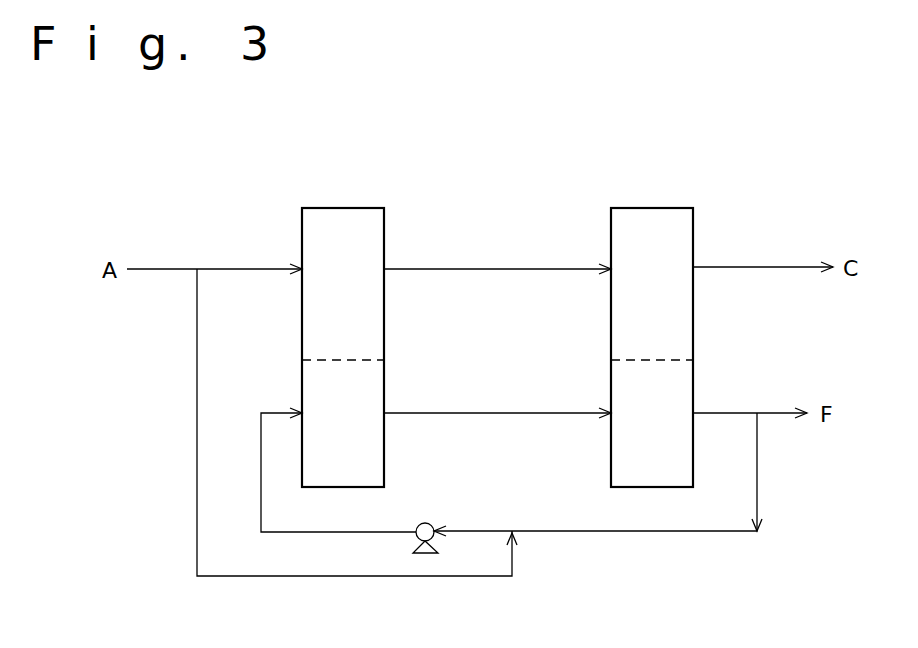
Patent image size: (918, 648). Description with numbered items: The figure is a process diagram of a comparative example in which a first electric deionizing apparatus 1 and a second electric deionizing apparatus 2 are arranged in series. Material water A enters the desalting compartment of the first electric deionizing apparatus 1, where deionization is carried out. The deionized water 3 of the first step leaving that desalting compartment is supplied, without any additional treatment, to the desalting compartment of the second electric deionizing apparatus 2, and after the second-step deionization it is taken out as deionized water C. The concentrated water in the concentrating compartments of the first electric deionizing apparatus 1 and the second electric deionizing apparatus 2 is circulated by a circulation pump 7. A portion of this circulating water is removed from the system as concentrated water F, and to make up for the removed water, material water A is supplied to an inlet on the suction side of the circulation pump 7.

The first electric deionizing apparatus 1 is at (374, 312).
The second electric deionizing apparatus 2 is at (683, 308).
The water deionized by the first electric deionizing apparatus 3 is at (497, 242).
The circulation pump 7 is at (445, 572).